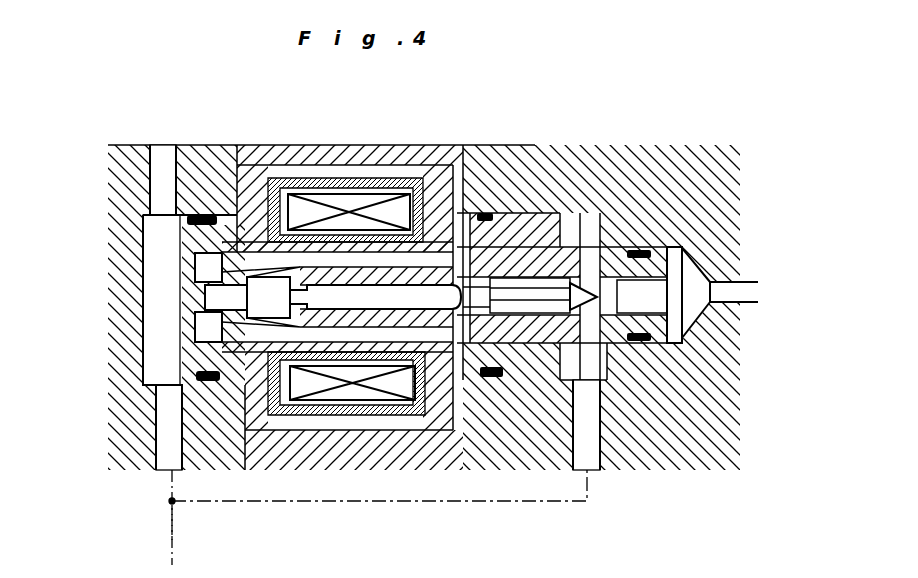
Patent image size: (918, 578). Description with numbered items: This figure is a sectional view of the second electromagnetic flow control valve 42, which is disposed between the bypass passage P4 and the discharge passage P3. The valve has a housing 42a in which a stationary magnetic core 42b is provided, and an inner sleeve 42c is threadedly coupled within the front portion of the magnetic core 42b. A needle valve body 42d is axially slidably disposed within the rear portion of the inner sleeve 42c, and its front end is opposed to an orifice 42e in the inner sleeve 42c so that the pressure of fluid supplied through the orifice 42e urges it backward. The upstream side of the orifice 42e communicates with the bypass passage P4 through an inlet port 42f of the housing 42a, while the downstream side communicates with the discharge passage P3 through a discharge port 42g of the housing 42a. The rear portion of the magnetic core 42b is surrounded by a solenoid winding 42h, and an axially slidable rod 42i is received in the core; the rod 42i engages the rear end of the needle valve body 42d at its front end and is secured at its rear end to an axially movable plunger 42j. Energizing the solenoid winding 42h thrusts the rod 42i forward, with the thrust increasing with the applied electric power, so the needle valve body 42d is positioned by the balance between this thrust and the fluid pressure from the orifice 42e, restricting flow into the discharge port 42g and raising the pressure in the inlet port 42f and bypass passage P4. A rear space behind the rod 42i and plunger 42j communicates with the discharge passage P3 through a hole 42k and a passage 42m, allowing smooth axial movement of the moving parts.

The electromagnetic flow control valve 42 is at (597, 126).
The housing 42a is at (470, 153).
The stationary magnetic core 42b is at (472, 205).
The inner sleeve 42c is at (600, 382).
The needle valve body 42d is at (638, 348).
The orifice 42e is at (617, 297).
The inlet port 42f is at (695, 335).
The discharge port 42g is at (600, 433).
The solenoid winding 42h is at (356, 202).
The rod 42i is at (438, 298).
The plunger 42j is at (275, 240).
The hole 42k is at (203, 298).
The passage 42m is at (160, 462).
The discharge passage P3 is at (178, 512).
The bypass passage P4 is at (747, 282).